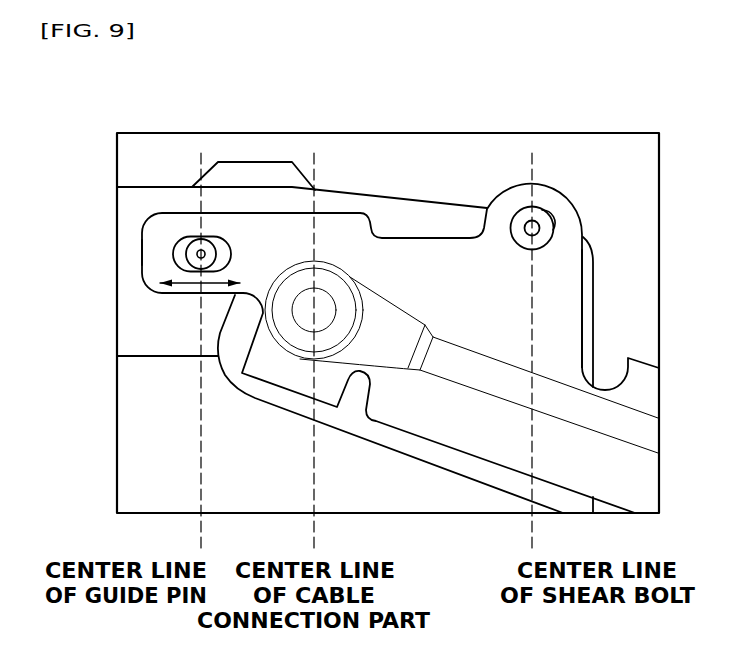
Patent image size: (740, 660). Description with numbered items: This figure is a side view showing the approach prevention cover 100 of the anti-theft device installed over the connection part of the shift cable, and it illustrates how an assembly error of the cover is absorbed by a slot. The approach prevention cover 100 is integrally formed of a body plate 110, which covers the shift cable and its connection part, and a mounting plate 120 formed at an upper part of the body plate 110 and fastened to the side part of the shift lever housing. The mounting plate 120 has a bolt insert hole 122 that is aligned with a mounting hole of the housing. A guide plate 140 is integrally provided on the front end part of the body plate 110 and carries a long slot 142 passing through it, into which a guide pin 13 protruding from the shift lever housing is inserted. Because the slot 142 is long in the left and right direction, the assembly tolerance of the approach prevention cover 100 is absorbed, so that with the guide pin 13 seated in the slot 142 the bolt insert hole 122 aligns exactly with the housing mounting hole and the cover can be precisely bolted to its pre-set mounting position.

The approach prevention cover 100 is at (414, 218).
The body plate 110 is at (455, 423).
The mounting plate 120 is at (555, 273).
The bolt insert hole 122 is at (540, 232).
The guide pin 13 is at (208, 251).
The guide plate 140 is at (179, 232).
The slot 142 is at (173, 257).